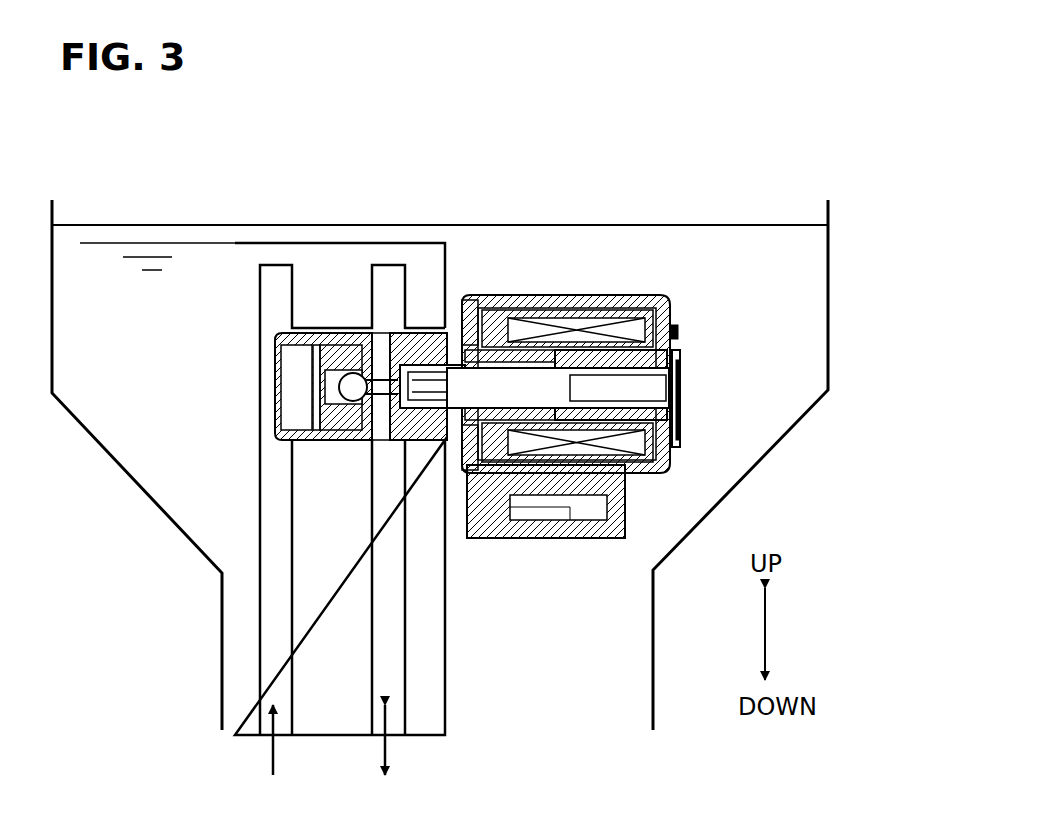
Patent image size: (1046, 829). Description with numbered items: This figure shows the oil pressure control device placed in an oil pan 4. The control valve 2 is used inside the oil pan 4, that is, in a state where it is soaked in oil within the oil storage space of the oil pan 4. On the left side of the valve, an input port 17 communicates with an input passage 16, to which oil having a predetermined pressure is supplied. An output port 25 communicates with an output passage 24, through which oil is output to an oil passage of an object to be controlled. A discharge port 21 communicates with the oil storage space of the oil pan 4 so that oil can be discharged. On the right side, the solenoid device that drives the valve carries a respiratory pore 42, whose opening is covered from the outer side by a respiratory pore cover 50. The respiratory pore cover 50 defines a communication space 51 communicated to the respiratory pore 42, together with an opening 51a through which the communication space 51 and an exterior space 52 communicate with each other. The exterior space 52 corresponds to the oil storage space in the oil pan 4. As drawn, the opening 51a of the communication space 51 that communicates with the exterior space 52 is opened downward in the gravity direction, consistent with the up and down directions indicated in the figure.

The control valve 2 is at (587, 280).
The oil pan 4 is at (830, 315).
The input passage 16 is at (278, 635).
The input port 17 is at (290, 365).
The discharge port 21 is at (450, 355).
The output passage 24 is at (383, 588).
The output port 25 is at (372, 385).
The respiratory pore 42 is at (685, 395).
The respiratory pore cover 50 is at (680, 418).
The communication space 51 is at (680, 430).
The opening 51a is at (675, 445).
The exterior space 52 is at (764, 268).